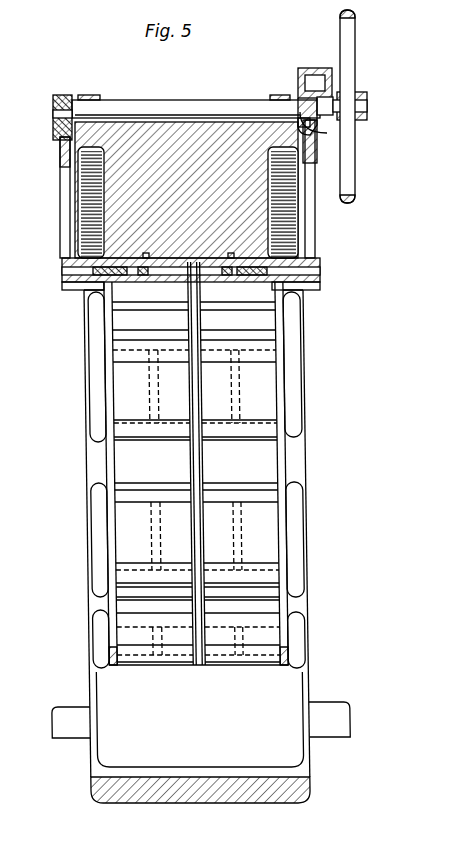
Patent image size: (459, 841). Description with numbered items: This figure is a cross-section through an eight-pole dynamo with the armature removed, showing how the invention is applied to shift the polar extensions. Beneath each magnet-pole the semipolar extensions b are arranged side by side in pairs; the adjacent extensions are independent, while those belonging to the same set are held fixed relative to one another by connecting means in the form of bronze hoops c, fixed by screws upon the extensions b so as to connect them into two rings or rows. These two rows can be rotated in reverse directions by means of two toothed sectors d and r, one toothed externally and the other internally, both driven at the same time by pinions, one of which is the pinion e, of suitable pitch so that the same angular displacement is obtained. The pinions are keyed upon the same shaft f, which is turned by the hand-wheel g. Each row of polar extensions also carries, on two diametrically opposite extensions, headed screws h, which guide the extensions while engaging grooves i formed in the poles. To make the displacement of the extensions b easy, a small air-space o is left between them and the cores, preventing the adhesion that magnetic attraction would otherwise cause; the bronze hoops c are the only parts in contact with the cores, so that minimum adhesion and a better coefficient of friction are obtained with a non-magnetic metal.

The shaft f is at (177, 108).
The pinion e is at (53, 125).
The toothed sector d is at (62, 228).
The toothed sector r is at (303, 69).
The hand-wheel g is at (361, 106).
The headed screw h is at (180, 285).
The air-space o is at (197, 285).
The hoop c is at (105, 322).
The semipolar extension b is at (196, 473).
The groove i is at (148, 407).